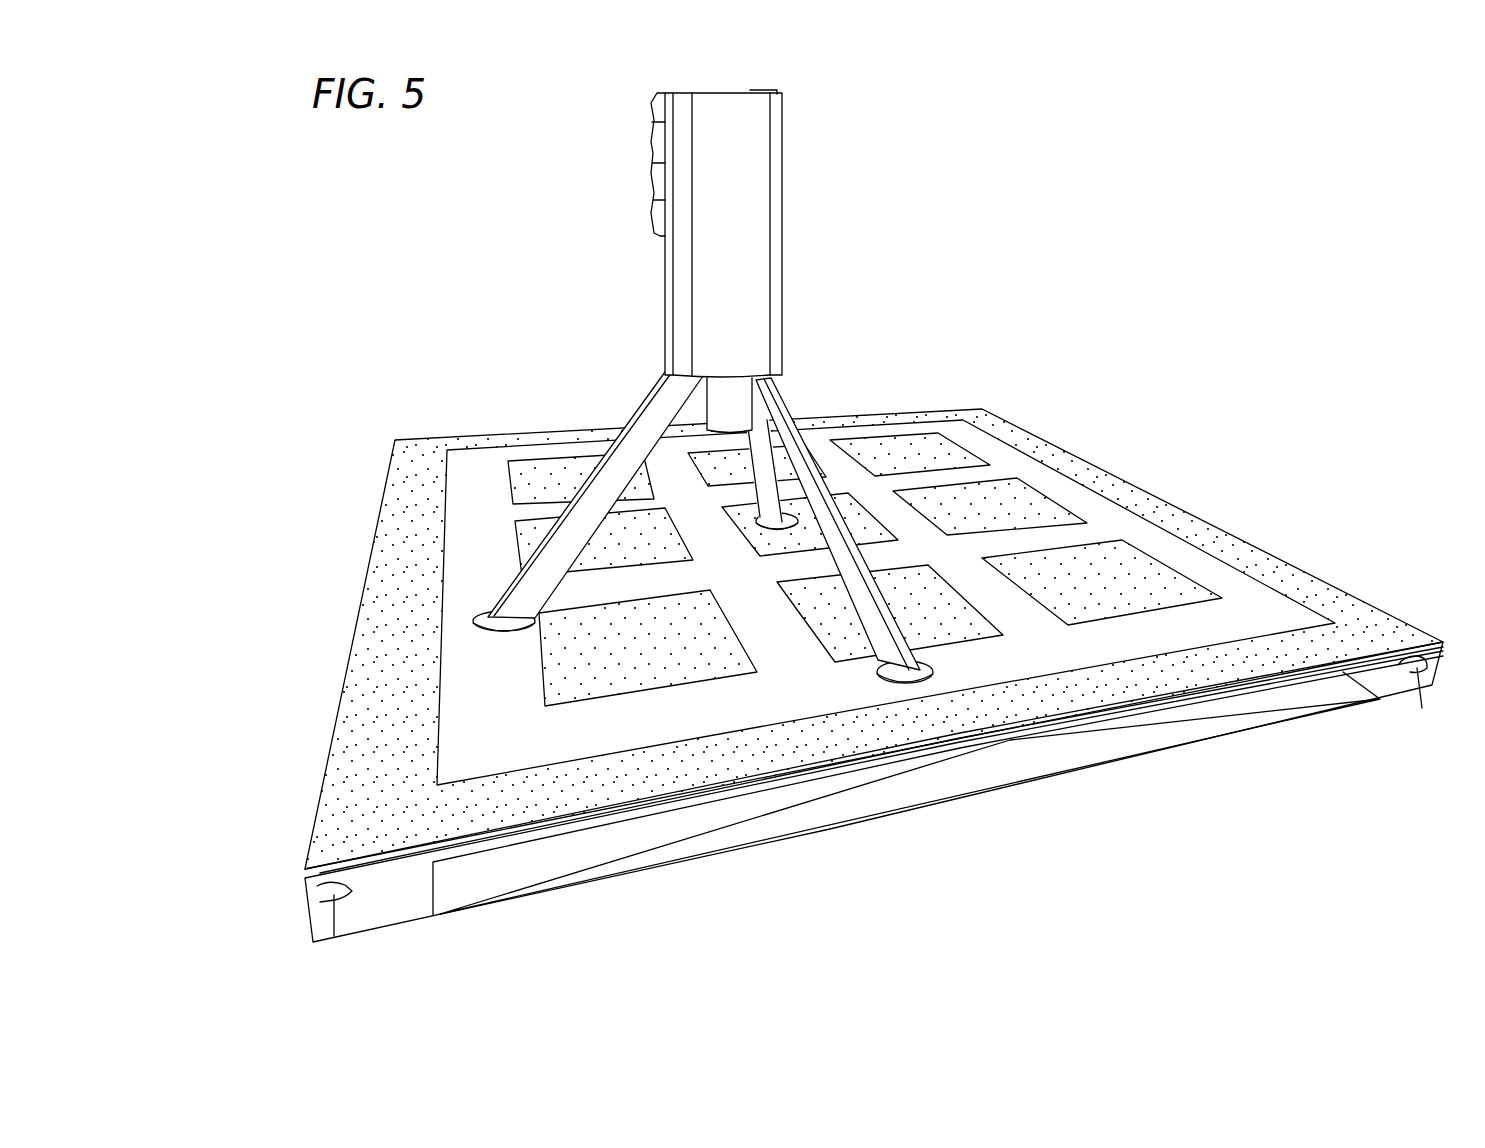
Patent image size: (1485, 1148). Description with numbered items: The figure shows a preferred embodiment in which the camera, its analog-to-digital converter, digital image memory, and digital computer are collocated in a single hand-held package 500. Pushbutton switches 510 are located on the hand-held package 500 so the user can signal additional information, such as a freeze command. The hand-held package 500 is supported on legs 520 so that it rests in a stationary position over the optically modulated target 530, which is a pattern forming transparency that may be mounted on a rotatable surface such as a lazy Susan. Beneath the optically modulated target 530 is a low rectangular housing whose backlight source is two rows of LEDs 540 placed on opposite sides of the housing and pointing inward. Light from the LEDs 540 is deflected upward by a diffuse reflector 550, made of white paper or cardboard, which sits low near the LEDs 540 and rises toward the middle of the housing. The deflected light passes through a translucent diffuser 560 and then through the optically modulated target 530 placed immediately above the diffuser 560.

The hand-held package 500 is at (784, 218).
The pushbutton switches 510 is at (656, 160).
The legs 520 is at (642, 398).
The optically modulated target 530 is at (1268, 550).
The LEDs 540 is at (334, 936).
The diffuse reflector 550 is at (641, 855).
The translucent diffuser 560 is at (304, 879).